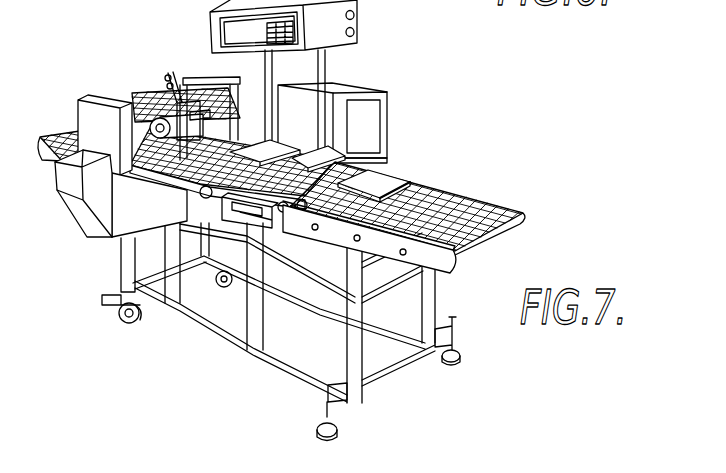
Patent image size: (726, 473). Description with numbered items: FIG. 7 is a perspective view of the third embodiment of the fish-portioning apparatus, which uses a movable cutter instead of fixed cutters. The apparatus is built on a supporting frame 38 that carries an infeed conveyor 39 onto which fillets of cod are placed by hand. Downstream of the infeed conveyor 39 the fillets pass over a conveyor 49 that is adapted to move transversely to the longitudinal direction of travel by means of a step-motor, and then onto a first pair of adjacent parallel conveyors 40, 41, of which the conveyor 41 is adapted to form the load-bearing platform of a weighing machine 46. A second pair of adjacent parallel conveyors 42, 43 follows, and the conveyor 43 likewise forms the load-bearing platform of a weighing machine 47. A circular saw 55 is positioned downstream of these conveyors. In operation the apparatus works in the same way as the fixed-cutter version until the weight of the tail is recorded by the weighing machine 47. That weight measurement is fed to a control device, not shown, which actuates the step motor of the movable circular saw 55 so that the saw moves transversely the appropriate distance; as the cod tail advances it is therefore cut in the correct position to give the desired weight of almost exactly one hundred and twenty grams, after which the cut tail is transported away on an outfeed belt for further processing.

The supporting frame 38 is at (235, 341).
The infeed conveyor 39 is at (450, 216).
The conveyor 40 is at (343, 218).
The conveyor 41 is at (402, 183).
The conveyor 42 is at (187, 193).
The conveyor 43 is at (245, 85).
The weighing machine 46 is at (382, 190).
The weighing machine 47 is at (277, 153).
The transversely movable conveyor 49 is at (325, 170).
The circular saw 55 is at (156, 122).